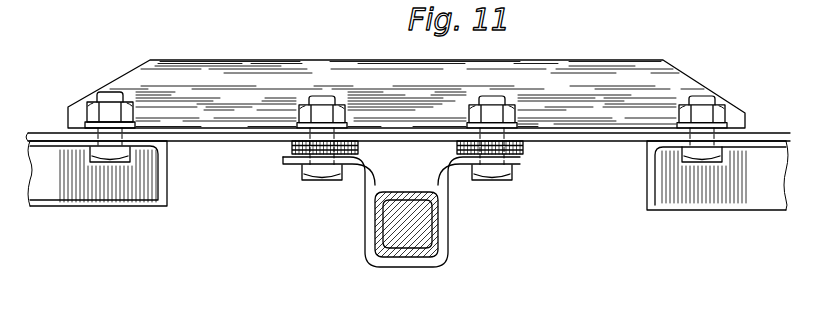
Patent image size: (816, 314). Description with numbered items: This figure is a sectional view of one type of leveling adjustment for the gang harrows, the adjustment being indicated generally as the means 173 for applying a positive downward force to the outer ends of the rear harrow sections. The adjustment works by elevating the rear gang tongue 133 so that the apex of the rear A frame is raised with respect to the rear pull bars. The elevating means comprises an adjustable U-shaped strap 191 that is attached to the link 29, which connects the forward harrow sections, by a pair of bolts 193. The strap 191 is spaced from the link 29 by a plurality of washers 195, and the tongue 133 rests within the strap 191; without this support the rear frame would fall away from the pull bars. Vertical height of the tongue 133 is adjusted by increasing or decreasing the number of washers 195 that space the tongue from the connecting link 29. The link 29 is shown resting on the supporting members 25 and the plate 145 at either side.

The link 29 is at (643, 68).
The mounting plate 145 is at (292, 141).
The bolts 193 is at (107, 92).
The washers 195 is at (523, 151).
The rail block 25 is at (160, 193).
The means for applying a positive downward force 173 is at (401, 226).
The U-shaped strap 191 is at (443, 212).
The rear gang tongue 133 is at (435, 235).